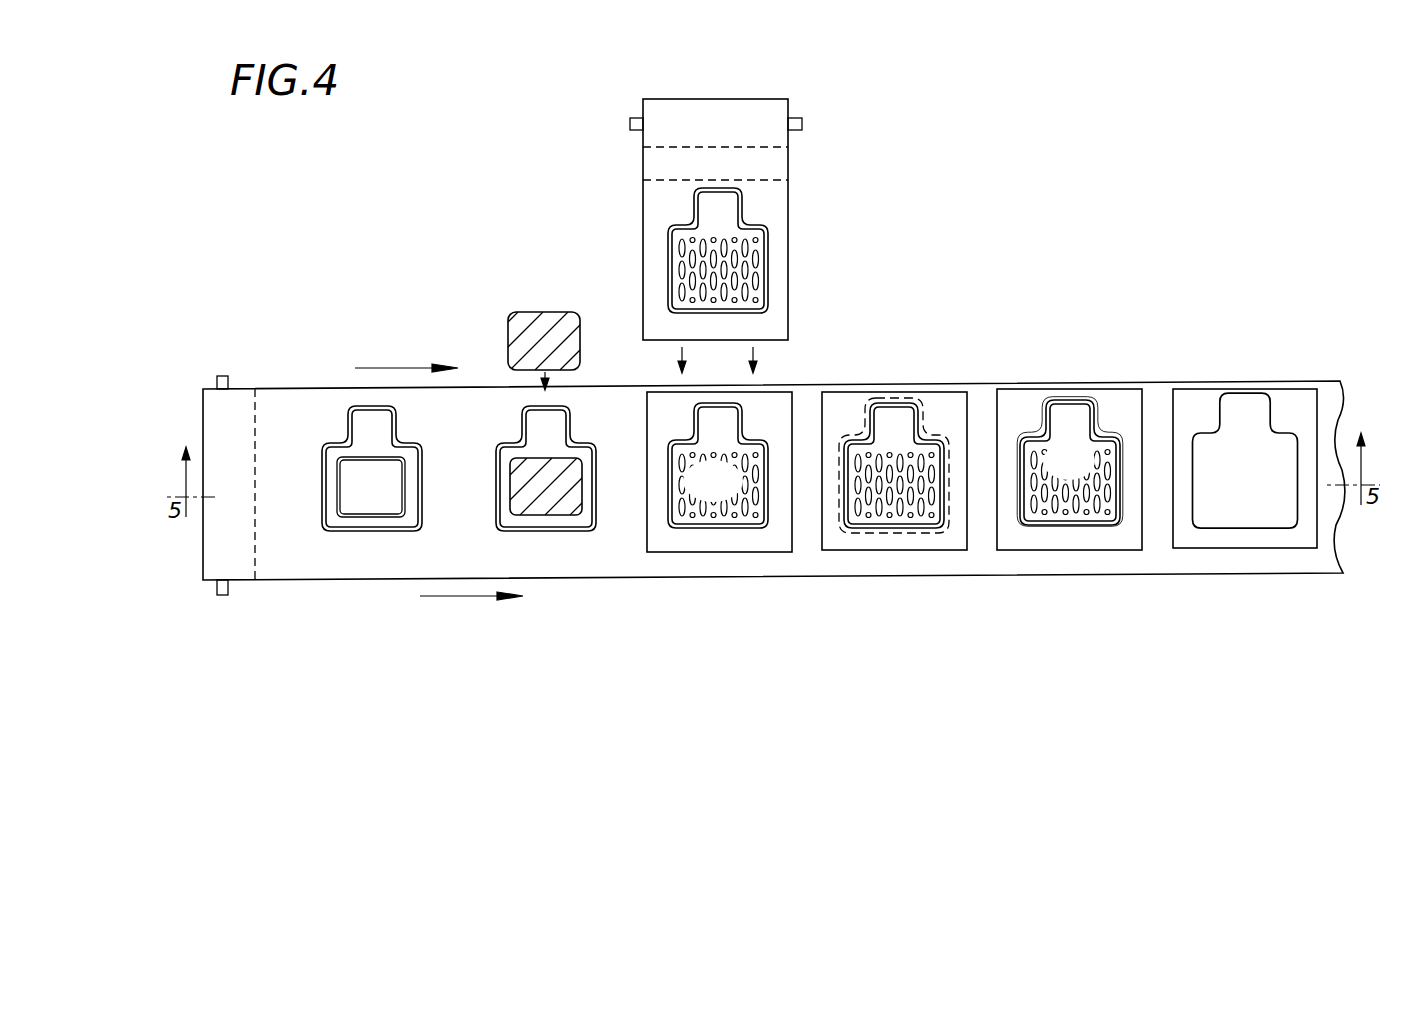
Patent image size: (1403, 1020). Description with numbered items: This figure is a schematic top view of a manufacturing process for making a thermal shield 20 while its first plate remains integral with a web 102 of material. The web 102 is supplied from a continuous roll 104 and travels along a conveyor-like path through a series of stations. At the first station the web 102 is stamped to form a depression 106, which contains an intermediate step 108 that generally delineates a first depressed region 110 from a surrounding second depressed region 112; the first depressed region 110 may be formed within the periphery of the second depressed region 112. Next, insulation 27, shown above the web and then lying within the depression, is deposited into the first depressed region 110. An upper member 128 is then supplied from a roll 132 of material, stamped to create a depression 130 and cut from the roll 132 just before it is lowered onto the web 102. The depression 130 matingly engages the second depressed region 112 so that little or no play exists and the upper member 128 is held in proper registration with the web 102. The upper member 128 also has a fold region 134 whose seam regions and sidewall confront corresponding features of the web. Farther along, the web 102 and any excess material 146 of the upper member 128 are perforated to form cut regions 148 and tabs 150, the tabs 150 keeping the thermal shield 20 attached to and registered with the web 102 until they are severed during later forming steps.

The web 102 is at (1333, 375).
The continuous roll 104 is at (208, 583).
The depression 106 is at (393, 500).
The intermediate step 108 is at (330, 497).
The first depressed region 110 is at (337, 468).
The second depressed region 112 is at (372, 420).
The insulation 27 is at (521, 312).
The roll 132 is at (643, 108).
The upper member 128 is at (790, 252).
The fold region 134 is at (725, 530).
The depression 130 is at (738, 497).
The cut regions 148 is at (863, 530).
The tabs 150 is at (918, 402).
The thermal shield 20 is at (1088, 477).
The excess material 146 is at (1277, 536).